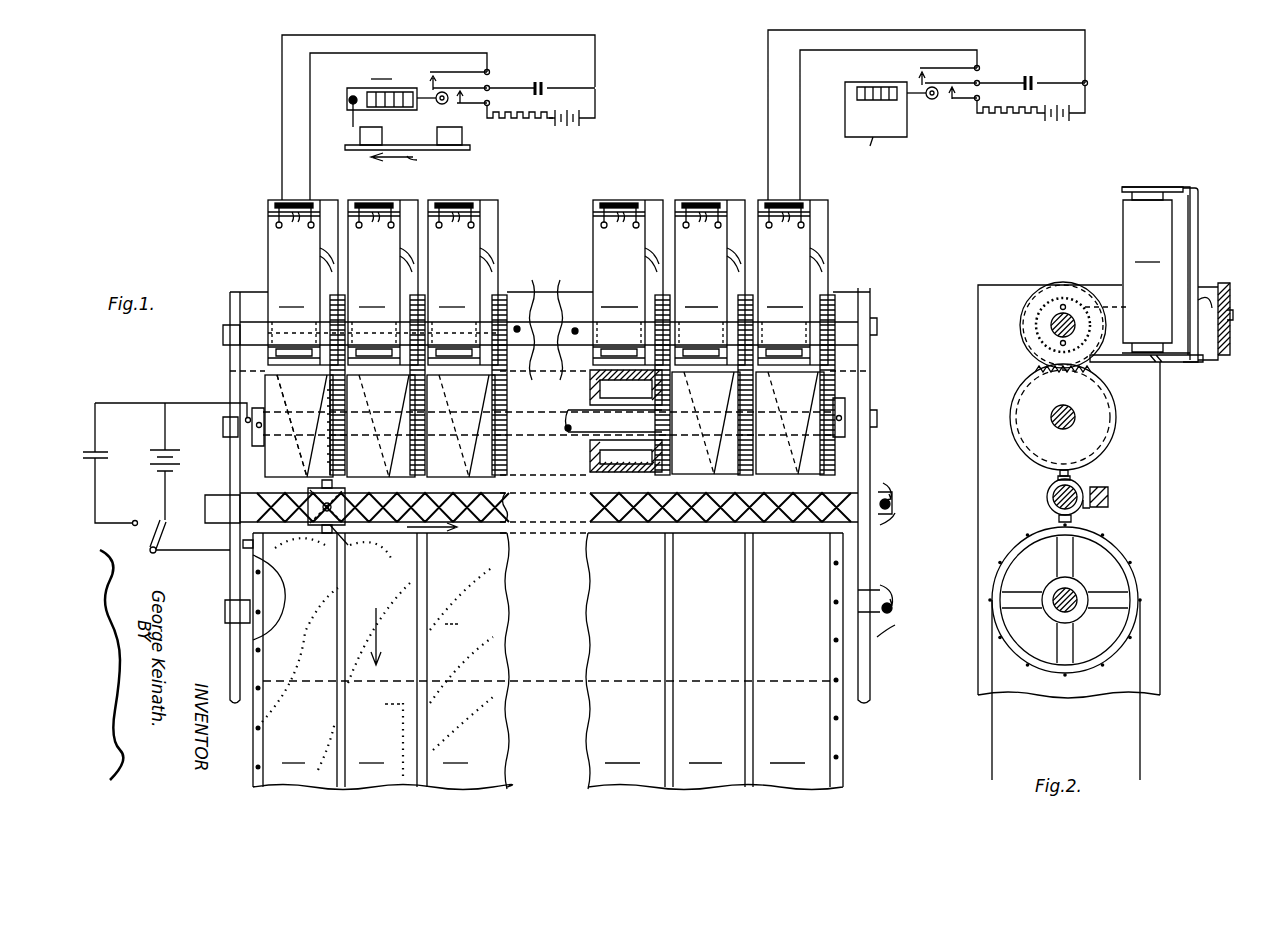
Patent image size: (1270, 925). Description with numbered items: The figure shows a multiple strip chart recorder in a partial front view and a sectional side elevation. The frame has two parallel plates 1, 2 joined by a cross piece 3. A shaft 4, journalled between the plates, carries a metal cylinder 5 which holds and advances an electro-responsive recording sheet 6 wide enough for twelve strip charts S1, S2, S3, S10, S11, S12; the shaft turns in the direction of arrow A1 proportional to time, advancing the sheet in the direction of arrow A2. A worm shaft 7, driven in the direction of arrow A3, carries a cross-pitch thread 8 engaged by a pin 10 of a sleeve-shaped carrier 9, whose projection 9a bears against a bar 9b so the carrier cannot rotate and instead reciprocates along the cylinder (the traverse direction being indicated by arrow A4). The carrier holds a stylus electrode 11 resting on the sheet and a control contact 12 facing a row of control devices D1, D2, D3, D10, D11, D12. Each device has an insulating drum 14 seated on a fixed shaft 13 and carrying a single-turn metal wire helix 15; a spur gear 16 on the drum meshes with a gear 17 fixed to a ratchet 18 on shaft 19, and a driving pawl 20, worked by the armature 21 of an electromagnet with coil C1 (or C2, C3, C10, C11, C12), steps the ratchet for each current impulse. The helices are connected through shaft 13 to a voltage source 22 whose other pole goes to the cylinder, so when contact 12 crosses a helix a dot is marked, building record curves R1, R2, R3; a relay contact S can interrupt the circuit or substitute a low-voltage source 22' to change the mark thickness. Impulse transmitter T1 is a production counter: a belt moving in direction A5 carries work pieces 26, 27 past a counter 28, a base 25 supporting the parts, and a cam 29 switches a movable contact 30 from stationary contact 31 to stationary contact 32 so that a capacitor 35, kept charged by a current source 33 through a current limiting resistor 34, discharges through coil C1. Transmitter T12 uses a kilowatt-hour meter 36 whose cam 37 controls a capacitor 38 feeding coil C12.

In FIG. 1, the plate 1 is at (230, 466).
In FIG. 2, the plate 1 is at (978, 469).
In FIG. 1, the plate 2 is at (862, 457).
In FIG. 1, the cross piece 3 is at (253, 298).
In FIG. 2, the cross piece 3 is at (1230, 292).
In FIG. 1, the shaft 4 is at (240, 625).
In FIG. 2, the shaft 4 is at (1056, 611).
In FIG. 1, the metal cylinder 5 is at (248, 573).
In FIG. 2, the metal cylinder 5 is at (1132, 586).
In FIG. 1, the recording sheet 6 is at (843, 734).
In FIG. 2, the recording sheet 6 is at (992, 738).
In FIG. 1, the worm shaft 7 is at (205, 511).
In FIG. 2, the worm shaft 7 is at (1049, 495).
In FIG. 1, the thread 8 is at (605, 522).
In FIG. 1, the sleeve-shaped carrier 9 is at (318, 497).
In FIG. 2, the sleeve-shaped carrier 9 is at (1082, 478).
In FIG. 2, the projection 9a is at (1095, 508).
In FIG. 2, the bar 9b is at (1108, 495).
In FIG. 1, the pin 10 is at (324, 533).
In FIG. 1, the stylus electrode 11 is at (332, 533).
In FIG. 2, the stylus electrode 11 is at (1059, 518).
In FIG. 1, the control contact 12 is at (333, 483).
In FIG. 2, the control contact 12 is at (1093, 465).
In FIG. 1, the shaft 13 is at (223, 423).
In FIG. 2, the shaft 13 is at (1053, 416).
In FIG. 1, the insulating cylindric body 14 is at (266, 384).
In FIG. 2, the insulating cylindric body 14 is at (1112, 392).
In FIG. 1, the metal wire 15 is at (320, 457).
In FIG. 1, the spur gear 16 is at (330, 391).
In FIG. 2, the spur gear 16 is at (1038, 376).
In FIG. 1, the gear 17 is at (345, 296).
In FIG. 2, the gear 17 is at (1039, 288).
In FIG. 1, the ratchet 18 is at (330, 331).
In FIG. 2, the ratchet 18 is at (1121, 303).
In FIG. 1, the shaft 19 is at (240, 336).
In FIG. 2, the shaft 19 is at (1051, 326).
In FIG. 2, the driving pawl 20 is at (1115, 362).
In FIG. 1, the armature 21 is at (305, 197).
In FIG. 2, the armature 21 is at (1155, 188).
In FIG. 1, the voltage source 22 is at (173, 461).
In FIG. 1, the low-voltage source 22' is at (110, 464).
In FIG. 1, the counter base 25 is at (410, 146).
In FIG. 1, the work piece 26 is at (360, 137).
In FIG. 1, the work piece 27 is at (354, 96).
In FIG. 1, the counter 28 is at (350, 104).
In FIG. 1, the cam 29 is at (442, 104).
In FIG. 1, the movable contact 30 is at (443, 89).
In FIG. 1, the stationary contact 31 is at (470, 106).
In FIG. 1, the stationary contact 32 is at (437, 78).
In FIG. 1, the current source 33 is at (572, 128).
In FIG. 1, the current limiting resistor 34 is at (530, 122).
In FIG. 1, the capacitor 35 is at (544, 82).
In FIG. 1, the meter 36 is at (845, 104).
In FIG. 1, the cam 37 is at (932, 99).
In FIG. 1, the capacitor 38 is at (1034, 79).
In FIG. 1, the arrow A1 is at (890, 623).
In FIG. 1, the arrow A2 is at (388, 636).
In FIG. 1, the arrow A3 is at (888, 519).
In FIG. 1, the arrow direction A4 is at (415, 525).
In FIG. 1, the arrow A5 is at (405, 160).
In FIG. 1, the control coil C1 is at (280, 244).
In FIG. 2, the control coil C1 is at (1123, 208).
In FIG. 1, the control coil C2 is at (392, 200).
In FIG. 1, the control coil C3 is at (472, 200).
In FIG. 1, the control coil C10 is at (640, 200).
In FIG. 1, the control coil C11 is at (722, 200).
In FIG. 1, the control coil C12 is at (805, 200).
In FIG. 1, the control device D1 is at (291, 297).
In FIG. 2, the control device D1 is at (1147, 252).
In FIG. 1, the control device D2 is at (372, 297).
In FIG. 1, the control device D3 is at (452, 297).
In FIG. 1, the control device D10 is at (619, 297).
In FIG. 1, the control device D11 is at (703, 297).
In FIG. 1, the control device D12 is at (785, 297).
In FIG. 1, the strip chart S1 is at (313, 660).
In FIG. 1, the strip chart S2 is at (393, 660).
In FIG. 1, the strip chart S3 is at (476, 661).
In FIG. 1, the strip chart S10 is at (613, 661).
In FIG. 1, the strip chart S11 is at (693, 660).
In FIG. 1, the strip chart S12 is at (775, 660).
In FIG. 1, the record curve R1 is at (301, 654).
In FIG. 1, the record curve R2 is at (379, 661).
In FIG. 1, the record curve R3 is at (461, 658).
In FIG. 1, the relay contact S is at (150, 547).
In FIG. 1, the impulse transmitter T1 is at (382, 85).
In FIG. 1, the impulse transmitter T12 is at (928, 115).